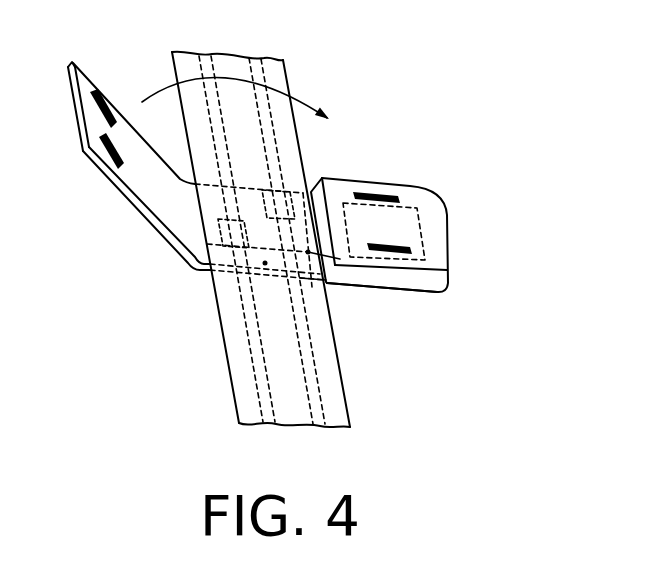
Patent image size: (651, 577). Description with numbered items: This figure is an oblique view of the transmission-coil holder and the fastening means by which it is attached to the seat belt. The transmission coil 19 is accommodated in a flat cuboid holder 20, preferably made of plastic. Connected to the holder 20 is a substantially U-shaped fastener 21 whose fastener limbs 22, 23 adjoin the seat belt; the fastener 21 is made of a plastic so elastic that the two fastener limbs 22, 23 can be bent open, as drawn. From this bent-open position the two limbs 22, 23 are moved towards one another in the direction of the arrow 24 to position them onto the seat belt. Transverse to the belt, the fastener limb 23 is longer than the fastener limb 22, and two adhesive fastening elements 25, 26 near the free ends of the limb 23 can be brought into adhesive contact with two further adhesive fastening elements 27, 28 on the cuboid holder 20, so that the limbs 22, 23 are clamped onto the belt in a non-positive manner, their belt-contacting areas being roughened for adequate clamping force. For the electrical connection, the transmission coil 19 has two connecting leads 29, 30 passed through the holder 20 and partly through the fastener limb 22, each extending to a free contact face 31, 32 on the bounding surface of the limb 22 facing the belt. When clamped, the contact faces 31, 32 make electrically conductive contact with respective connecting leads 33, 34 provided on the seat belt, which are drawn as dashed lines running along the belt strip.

The transmission coil 19 is at (420, 240).
The flat cuboid holder 20 is at (425, 200).
The U-shaped fastener 21 is at (202, 280).
The fastener limb 22 is at (266, 265).
The fastener limb 23 is at (142, 213).
The arrow 24 is at (303, 98).
The adhesive fastening element 25 is at (118, 180).
The adhesive fastening element 26 is at (98, 87).
The further adhesive fastening element 27 is at (413, 252).
The further adhesive fastening element 28 is at (385, 198).
The connecting lead 29 is at (327, 286).
The connecting lead 30 is at (299, 188).
The contact face 31 is at (222, 232).
The contact face 32 is at (267, 204).
The connecting lead 33 is at (200, 62).
The connecting lead 34 is at (258, 70).